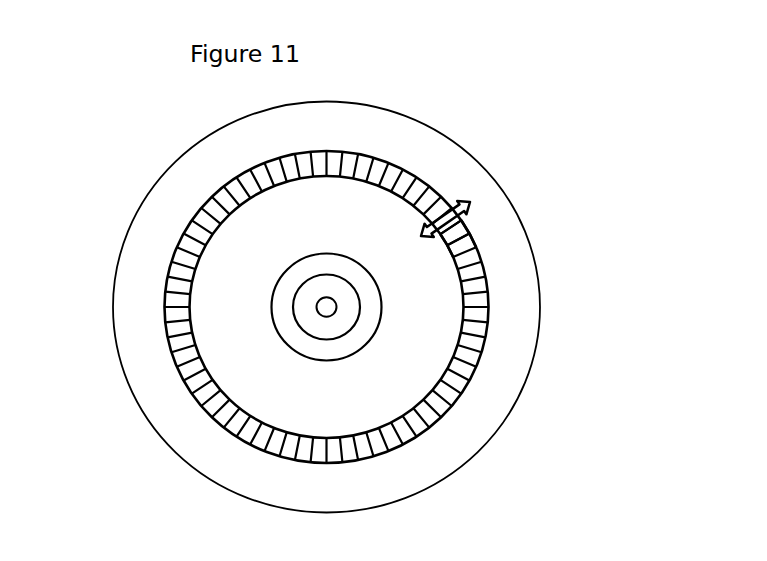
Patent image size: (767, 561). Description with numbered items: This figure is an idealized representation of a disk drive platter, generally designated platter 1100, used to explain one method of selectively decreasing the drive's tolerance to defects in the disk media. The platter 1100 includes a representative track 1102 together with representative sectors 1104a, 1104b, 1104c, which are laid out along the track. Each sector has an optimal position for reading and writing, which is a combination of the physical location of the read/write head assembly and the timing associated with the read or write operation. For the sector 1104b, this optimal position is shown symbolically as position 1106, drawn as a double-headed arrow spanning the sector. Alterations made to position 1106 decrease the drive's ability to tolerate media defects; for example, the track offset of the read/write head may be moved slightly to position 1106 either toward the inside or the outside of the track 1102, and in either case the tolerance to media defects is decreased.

The disk drive platter 1100 is at (430, 289).
The representative track 1102 is at (380, 307).
The representative sector 1104a is at (542, 181).
The representative sector 1104b is at (531, 196).
The representative sector 1104c is at (530, 217).
The optimal read/write position 1106 is at (406, 151).